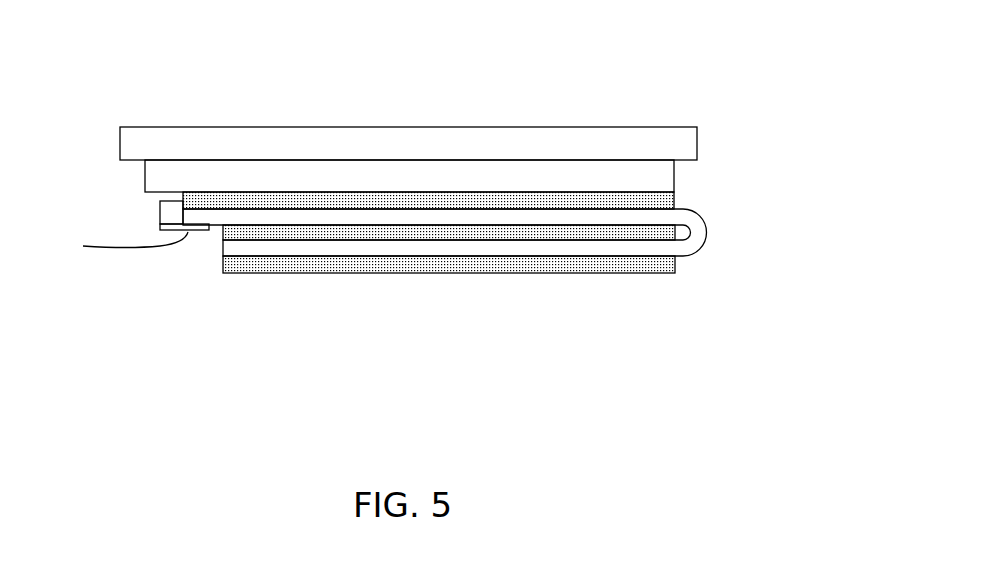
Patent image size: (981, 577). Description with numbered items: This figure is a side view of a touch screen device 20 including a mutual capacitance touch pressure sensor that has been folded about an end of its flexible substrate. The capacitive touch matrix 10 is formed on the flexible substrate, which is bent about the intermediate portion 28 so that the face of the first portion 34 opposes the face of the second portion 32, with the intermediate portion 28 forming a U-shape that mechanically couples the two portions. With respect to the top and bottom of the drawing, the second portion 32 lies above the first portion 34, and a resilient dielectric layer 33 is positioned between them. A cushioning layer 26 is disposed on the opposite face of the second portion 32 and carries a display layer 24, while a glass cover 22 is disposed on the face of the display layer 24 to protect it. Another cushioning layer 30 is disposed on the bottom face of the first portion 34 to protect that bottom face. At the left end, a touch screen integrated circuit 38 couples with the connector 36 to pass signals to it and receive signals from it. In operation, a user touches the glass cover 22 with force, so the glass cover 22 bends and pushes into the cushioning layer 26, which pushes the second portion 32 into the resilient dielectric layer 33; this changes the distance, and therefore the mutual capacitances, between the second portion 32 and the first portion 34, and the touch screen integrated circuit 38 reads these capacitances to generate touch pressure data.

The capacitive touch matrix 10 is at (203, 256).
The touch screen device 20 is at (124, 58).
The glass cover 22 is at (697, 144).
The display layer 24 is at (674, 176).
The cushioning layer 26 is at (674, 200).
The intermediate portion 28 is at (505, 261).
The cushioning layer 30 is at (675, 265).
The second portion 32 is at (497, 217).
The resilient dielectric layer 33 is at (560, 232).
The first portion 34 is at (448, 248).
The connector 36 is at (124, 244).
The touch screen integrated circuit 38 is at (159, 219).